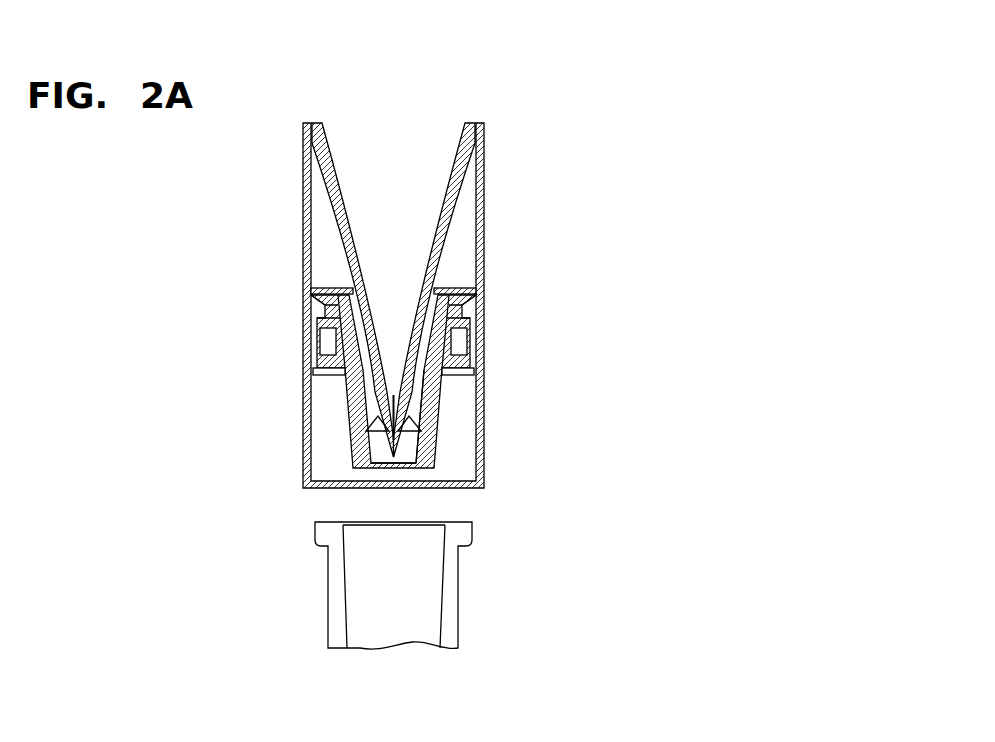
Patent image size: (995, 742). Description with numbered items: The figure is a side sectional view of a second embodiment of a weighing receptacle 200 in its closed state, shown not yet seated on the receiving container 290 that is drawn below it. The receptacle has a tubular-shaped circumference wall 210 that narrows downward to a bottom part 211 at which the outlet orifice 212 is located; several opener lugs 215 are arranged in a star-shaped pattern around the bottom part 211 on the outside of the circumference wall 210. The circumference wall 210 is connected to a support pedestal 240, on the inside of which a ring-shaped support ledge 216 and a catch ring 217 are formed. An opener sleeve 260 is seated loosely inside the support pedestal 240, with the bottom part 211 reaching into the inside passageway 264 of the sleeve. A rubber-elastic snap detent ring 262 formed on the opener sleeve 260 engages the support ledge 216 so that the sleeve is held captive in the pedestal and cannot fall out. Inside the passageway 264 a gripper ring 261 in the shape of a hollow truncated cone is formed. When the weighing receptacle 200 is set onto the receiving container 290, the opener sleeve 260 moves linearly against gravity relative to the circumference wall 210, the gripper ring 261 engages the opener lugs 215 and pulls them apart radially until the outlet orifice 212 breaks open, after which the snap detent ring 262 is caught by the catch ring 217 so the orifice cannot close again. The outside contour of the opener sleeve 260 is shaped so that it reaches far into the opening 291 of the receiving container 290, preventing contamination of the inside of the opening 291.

The weighing receptacle 200 is at (283, 209).
The tubular-shaped circumference wall 210 is at (452, 208).
The bottom part 211 is at (392, 448).
The outlet orifice 212 is at (390, 403).
The opener lugs 215 is at (387, 412).
The ring-shaped support ledge 216 is at (320, 313).
The catch ring 217 is at (315, 295).
The support pedestal 240 is at (484, 245).
The opener sleeve 260 is at (435, 360).
The gripper ring 261 is at (420, 428).
The rubber-elastic snap detent ring 262 is at (470, 315).
The inside passageway 264 is at (417, 390).
The receiving container 290 is at (450, 602).
The opening 291 is at (407, 520).